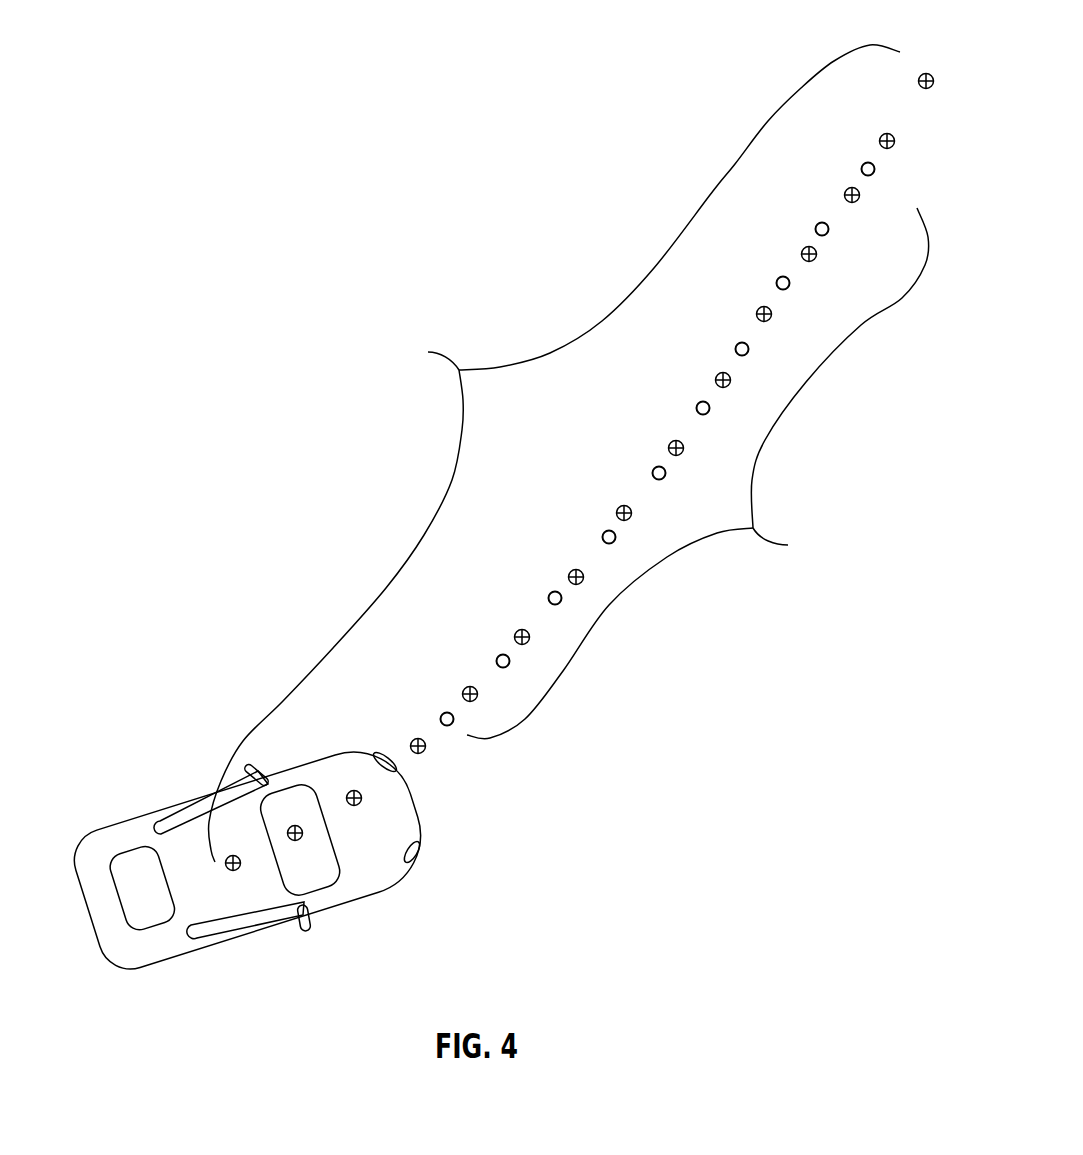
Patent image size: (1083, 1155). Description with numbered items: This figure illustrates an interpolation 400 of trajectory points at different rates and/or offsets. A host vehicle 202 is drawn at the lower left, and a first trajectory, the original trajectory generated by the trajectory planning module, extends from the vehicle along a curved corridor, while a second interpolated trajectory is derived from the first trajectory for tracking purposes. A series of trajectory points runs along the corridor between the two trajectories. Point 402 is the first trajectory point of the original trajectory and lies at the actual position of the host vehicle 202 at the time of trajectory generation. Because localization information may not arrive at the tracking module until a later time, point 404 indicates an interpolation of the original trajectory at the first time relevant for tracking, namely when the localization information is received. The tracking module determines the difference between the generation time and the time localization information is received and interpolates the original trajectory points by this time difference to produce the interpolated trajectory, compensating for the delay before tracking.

The interpolation 400 is at (181, 311).
The host vehicle 202 is at (103, 908).
The first trajectory point 402 is at (223, 864).
The interpolated trajectory point 404 is at (442, 707).